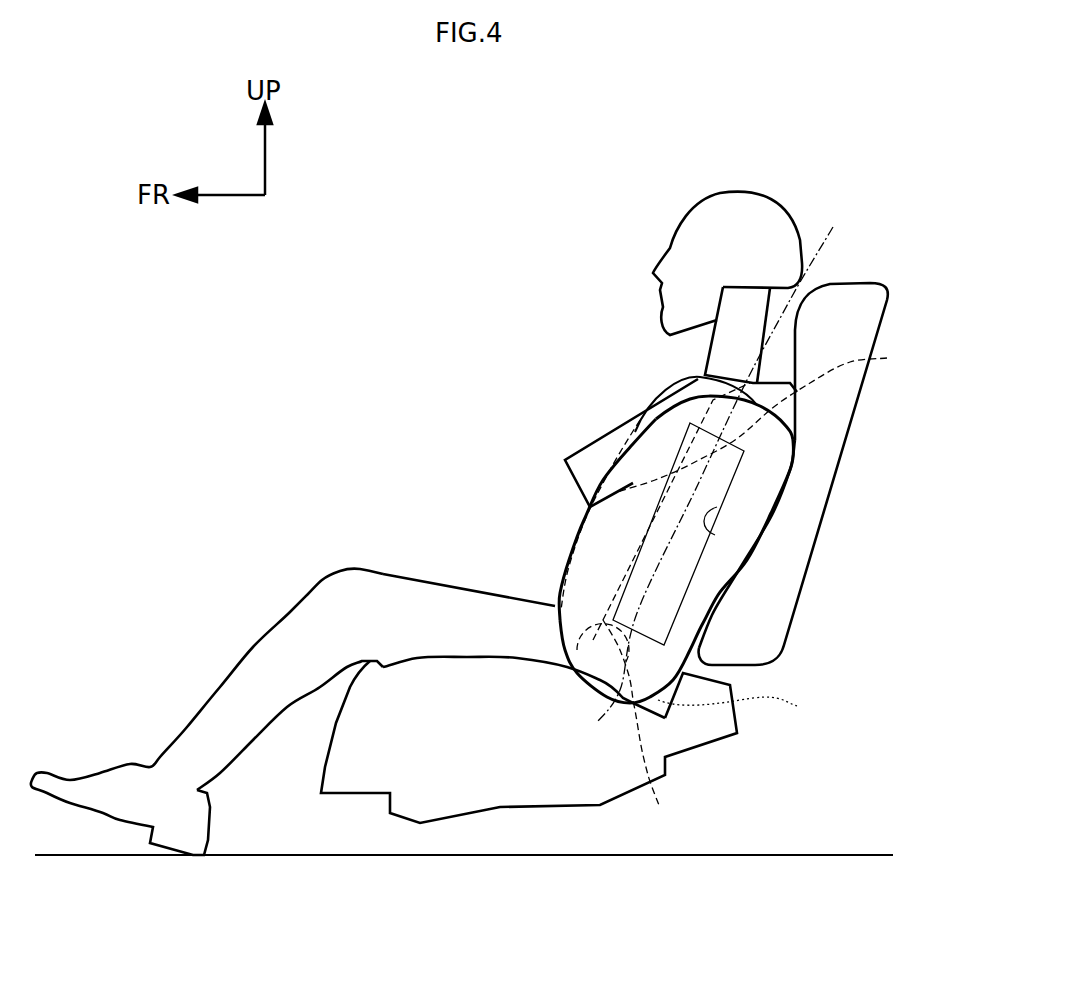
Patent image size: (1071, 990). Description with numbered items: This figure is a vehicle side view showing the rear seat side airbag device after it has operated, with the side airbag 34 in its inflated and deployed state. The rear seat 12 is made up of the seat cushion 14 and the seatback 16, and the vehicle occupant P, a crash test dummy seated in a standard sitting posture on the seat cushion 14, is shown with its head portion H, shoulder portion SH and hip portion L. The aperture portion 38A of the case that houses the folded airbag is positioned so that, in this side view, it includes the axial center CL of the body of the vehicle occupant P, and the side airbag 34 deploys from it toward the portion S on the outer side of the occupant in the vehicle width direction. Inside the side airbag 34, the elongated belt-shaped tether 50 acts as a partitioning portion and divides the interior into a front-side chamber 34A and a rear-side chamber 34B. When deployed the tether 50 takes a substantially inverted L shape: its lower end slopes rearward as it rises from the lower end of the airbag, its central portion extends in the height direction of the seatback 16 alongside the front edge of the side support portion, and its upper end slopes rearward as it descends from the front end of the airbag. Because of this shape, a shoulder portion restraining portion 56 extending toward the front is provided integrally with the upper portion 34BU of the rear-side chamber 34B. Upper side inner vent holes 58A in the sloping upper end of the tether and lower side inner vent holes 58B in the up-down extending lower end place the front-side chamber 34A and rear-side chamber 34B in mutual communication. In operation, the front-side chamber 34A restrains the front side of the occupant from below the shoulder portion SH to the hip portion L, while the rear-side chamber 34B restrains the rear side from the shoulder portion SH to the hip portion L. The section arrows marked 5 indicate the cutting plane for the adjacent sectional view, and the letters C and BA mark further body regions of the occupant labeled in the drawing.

The rear seat 12 is at (868, 265).
The seat cushion 14 is at (425, 673).
The seatback 16 is at (867, 322).
The side airbag 34 is at (683, 549).
The front-side chamber 34A is at (617, 527).
The rear-side chamber 34B is at (713, 568).
The upper portion of rear-side chamber 34BU is at (767, 440).
The aperture portion 38A is at (705, 508).
The tether 50 is at (577, 650).
The shoulder portion restraining portion 56 is at (717, 428).
The upper side inner vent holes 58A is at (751, 491).
The lower side inner vent holes 58B is at (673, 733).
The section line of FIG. 5 is at (475, 502).
The head portion H is at (730, 205).
The axial center CL is at (726, 459).
The shoulder portion SH is at (696, 376).
The vehicle occupant P is at (662, 398).
The chest of occupant C is at (650, 410).
The back of occupant BA is at (758, 443).
The portion on the outer side in the vehicle width direction S is at (753, 470).
The hip portion L is at (736, 711).